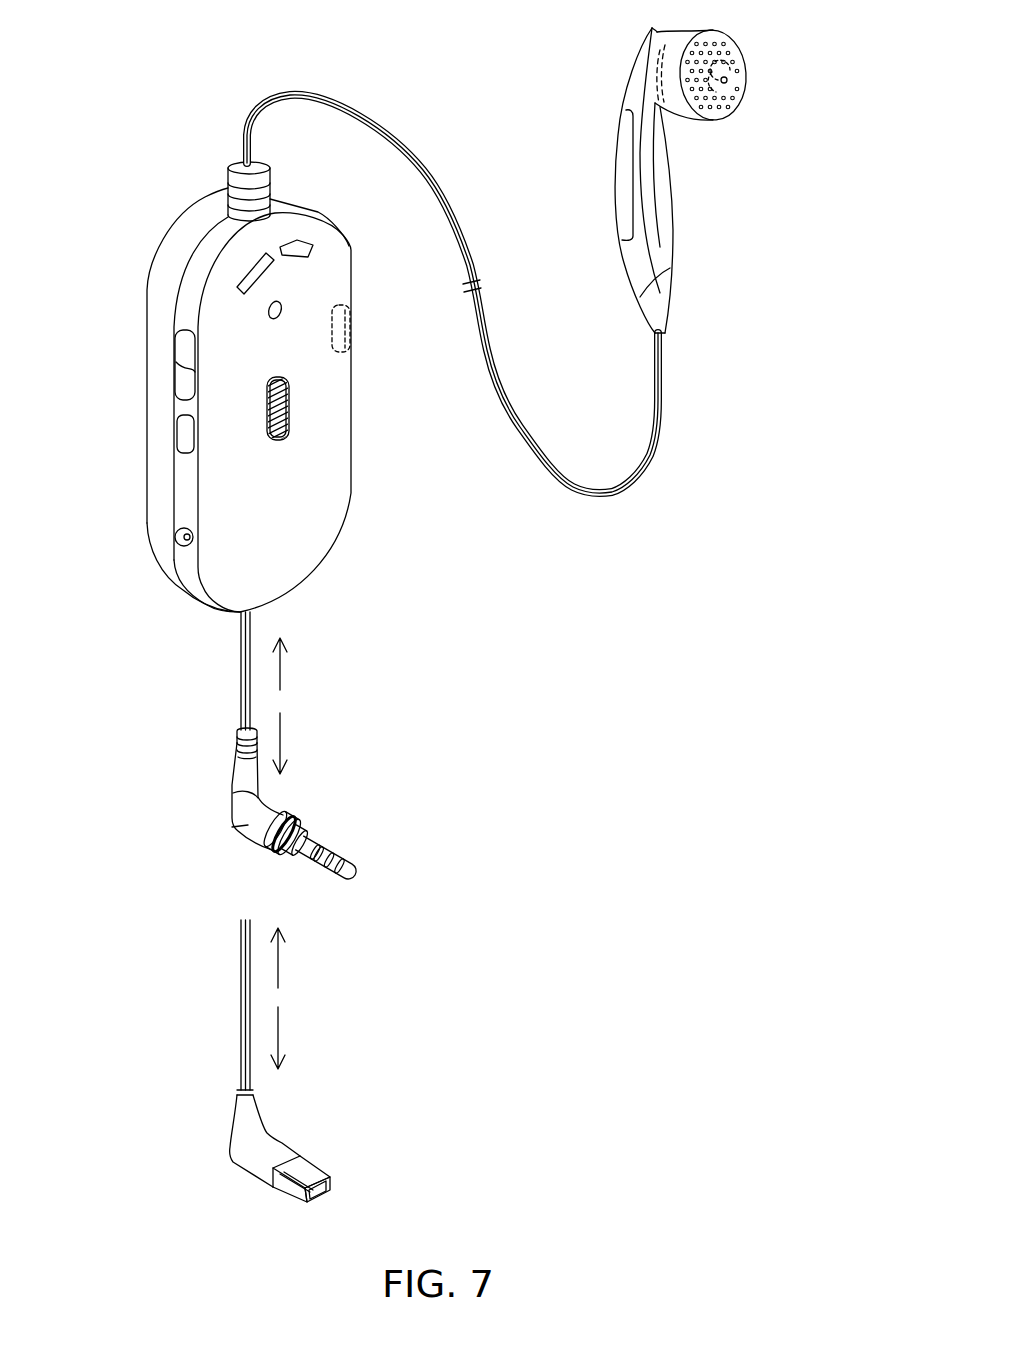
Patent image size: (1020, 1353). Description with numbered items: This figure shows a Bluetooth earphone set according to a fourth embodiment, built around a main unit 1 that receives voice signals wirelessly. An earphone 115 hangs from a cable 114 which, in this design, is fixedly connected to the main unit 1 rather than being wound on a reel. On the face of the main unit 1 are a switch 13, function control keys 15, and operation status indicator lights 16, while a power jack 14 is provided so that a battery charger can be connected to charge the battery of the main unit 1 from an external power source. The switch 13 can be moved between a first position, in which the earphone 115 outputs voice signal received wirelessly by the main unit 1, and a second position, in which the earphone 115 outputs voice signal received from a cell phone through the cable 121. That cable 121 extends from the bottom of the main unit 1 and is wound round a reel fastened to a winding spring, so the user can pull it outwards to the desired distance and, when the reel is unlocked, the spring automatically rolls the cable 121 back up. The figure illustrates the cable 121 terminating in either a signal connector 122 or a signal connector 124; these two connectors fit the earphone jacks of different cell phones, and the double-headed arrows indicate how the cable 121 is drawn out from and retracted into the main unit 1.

The main unit 1 is at (368, 366).
The switch 13 is at (285, 408).
The power jack 14 is at (184, 540).
The function control keys 15 is at (182, 350).
The operation status indicator lights 16 is at (253, 273).
The cable 114 is at (427, 172).
The earphone 115 is at (660, 192).
The cable 121 is at (242, 684).
The signal connector 122 is at (231, 823).
The signal connector 124 is at (263, 1156).